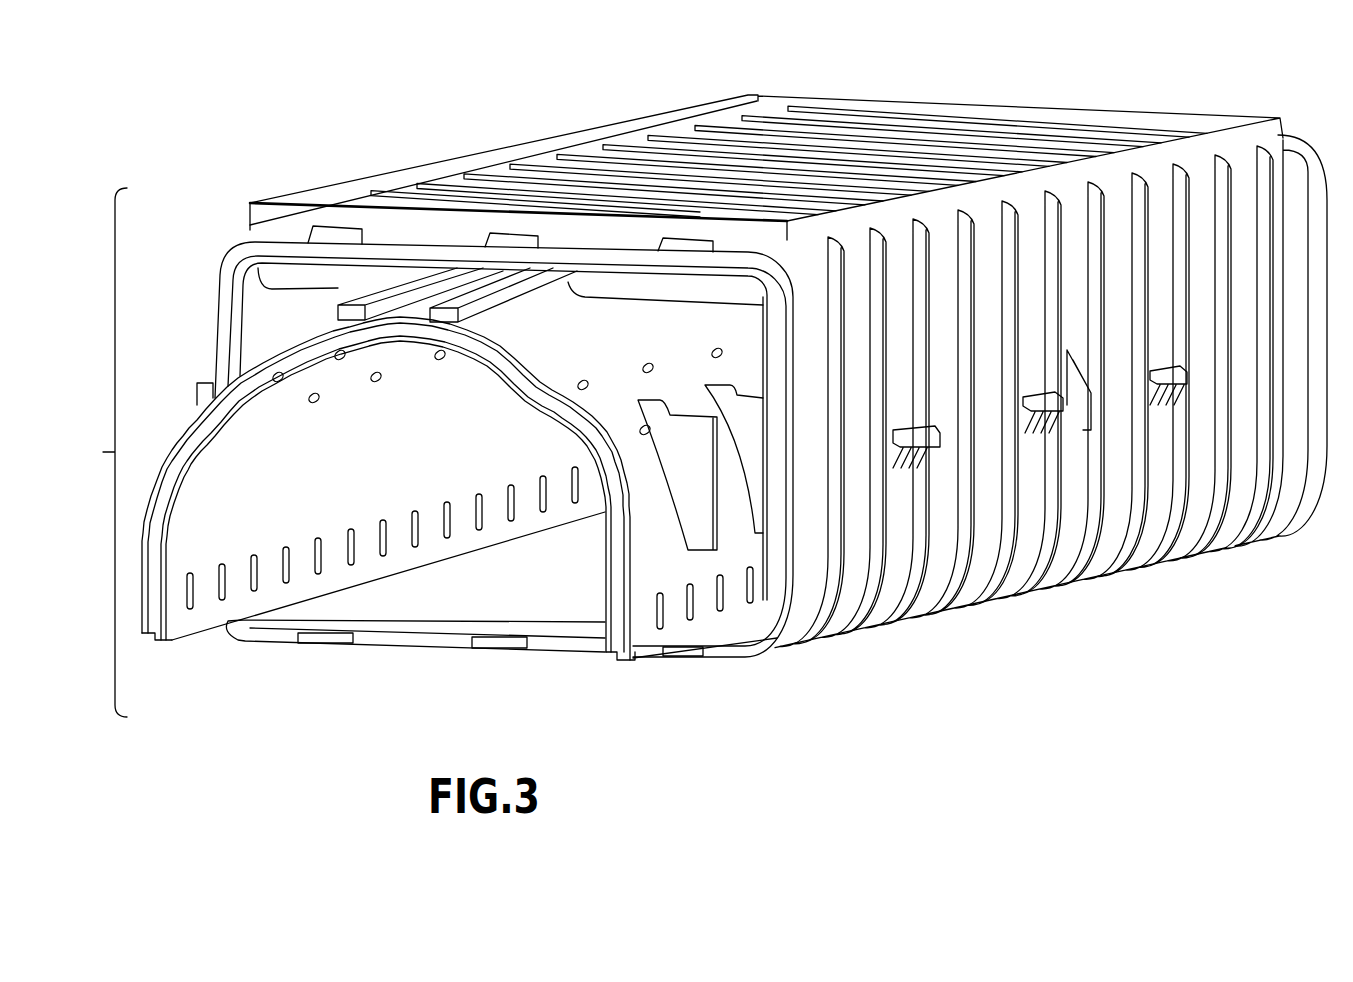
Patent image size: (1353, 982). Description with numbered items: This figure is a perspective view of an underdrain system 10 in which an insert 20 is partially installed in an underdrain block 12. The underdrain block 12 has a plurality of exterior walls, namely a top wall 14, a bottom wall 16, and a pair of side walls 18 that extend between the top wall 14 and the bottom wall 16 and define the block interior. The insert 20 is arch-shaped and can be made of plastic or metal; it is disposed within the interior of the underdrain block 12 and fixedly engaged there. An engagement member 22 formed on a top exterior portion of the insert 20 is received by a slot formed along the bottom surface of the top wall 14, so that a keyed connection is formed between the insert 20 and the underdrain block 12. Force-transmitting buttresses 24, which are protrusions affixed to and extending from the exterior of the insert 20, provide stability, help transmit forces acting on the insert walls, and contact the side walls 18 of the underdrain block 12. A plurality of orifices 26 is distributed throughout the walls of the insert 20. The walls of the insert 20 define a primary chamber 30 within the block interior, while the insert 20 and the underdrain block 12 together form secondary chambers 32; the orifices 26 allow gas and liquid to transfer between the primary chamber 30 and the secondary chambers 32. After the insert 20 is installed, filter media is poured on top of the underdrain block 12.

The underdrain system 10 is at (100, 452).
The underdrain block 12 is at (1023, 630).
The top wall 14 is at (637, 163).
The bottom wall 16 is at (552, 628).
The side walls 18 is at (228, 313).
The insert 20 is at (177, 453).
The engagement member 22 is at (410, 288).
The force-transmitting buttresses 24 is at (690, 473).
The orifices 26 is at (316, 403).
The primary chamber 30 is at (447, 461).
The secondary chambers 32 is at (281, 322).